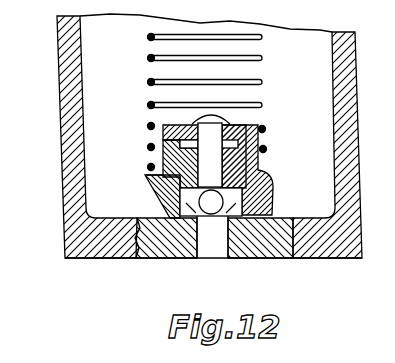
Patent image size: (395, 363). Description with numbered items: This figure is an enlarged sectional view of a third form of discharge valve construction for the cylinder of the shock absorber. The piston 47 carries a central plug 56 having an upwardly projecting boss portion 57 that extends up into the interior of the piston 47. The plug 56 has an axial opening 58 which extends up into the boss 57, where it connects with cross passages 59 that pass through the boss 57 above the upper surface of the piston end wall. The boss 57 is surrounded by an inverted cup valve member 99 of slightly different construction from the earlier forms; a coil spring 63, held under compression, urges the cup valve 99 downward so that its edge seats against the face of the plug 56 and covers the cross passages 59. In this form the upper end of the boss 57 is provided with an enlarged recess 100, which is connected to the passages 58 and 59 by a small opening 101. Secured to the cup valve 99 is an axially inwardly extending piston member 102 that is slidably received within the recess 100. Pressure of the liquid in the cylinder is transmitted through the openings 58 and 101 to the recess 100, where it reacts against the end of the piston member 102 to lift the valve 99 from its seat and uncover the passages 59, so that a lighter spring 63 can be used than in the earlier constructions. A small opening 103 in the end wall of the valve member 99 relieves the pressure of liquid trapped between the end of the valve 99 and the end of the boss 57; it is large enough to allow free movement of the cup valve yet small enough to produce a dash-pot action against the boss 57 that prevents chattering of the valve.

The piston 47 is at (66, 46).
The coil spring 63 is at (148, 82).
The piston member 102 is at (168, 160).
The small opening 103 is at (264, 132).
The enlarged recess 100 is at (262, 160).
The cup valve member 99 is at (147, 182).
The small opening 101 is at (153, 192).
The boss portion 57 is at (244, 182).
The cross passages 59 is at (213, 237).
The central plug 56 is at (150, 244).
The axial opening 58 is at (223, 250).